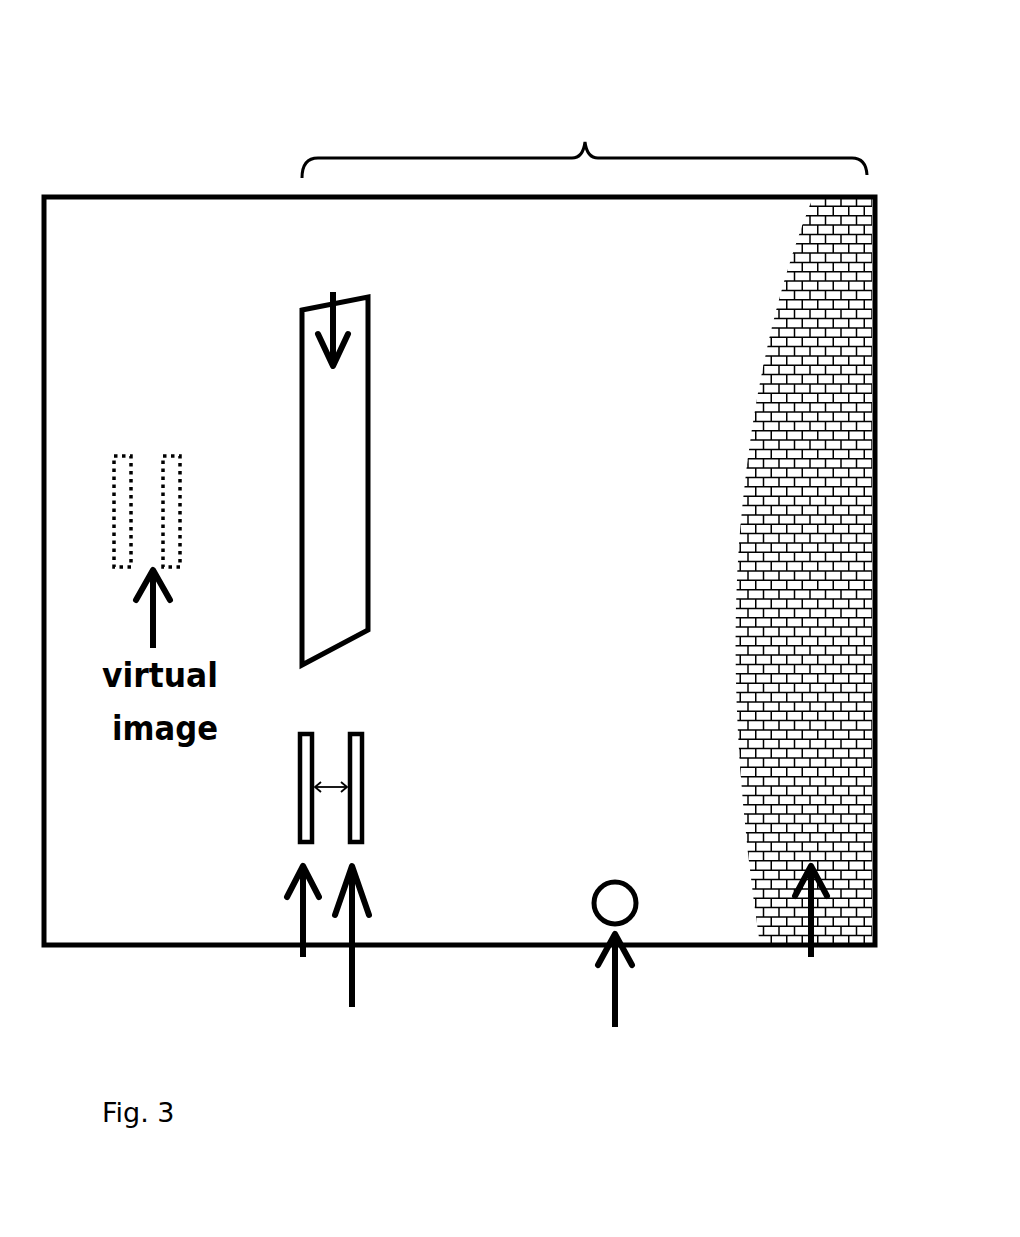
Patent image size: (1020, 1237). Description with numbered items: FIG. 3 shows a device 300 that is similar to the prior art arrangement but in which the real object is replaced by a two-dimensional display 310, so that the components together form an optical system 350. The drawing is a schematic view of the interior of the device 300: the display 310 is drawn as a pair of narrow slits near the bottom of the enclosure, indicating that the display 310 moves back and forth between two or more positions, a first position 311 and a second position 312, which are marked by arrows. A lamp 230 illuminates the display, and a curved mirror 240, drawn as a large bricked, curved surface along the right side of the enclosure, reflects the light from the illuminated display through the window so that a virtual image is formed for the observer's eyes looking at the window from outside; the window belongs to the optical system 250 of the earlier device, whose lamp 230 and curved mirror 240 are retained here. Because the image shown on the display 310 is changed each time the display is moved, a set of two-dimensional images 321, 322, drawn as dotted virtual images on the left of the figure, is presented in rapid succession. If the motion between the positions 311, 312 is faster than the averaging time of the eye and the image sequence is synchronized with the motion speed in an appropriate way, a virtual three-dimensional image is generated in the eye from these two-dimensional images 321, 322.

The device 300 is at (103, 188).
The optical system 350 is at (584, 143).
The optical system 250 is at (366, 448).
The two-dimensional image 321 is at (117, 491).
The two-dimensional image 322 is at (190, 491).
The two-dimensional display 310 is at (331, 788).
The first position 311 is at (206, 907).
The second position 312 is at (343, 958).
The lamp 230 is at (630, 957).
The curved mirror 240 is at (775, 611).